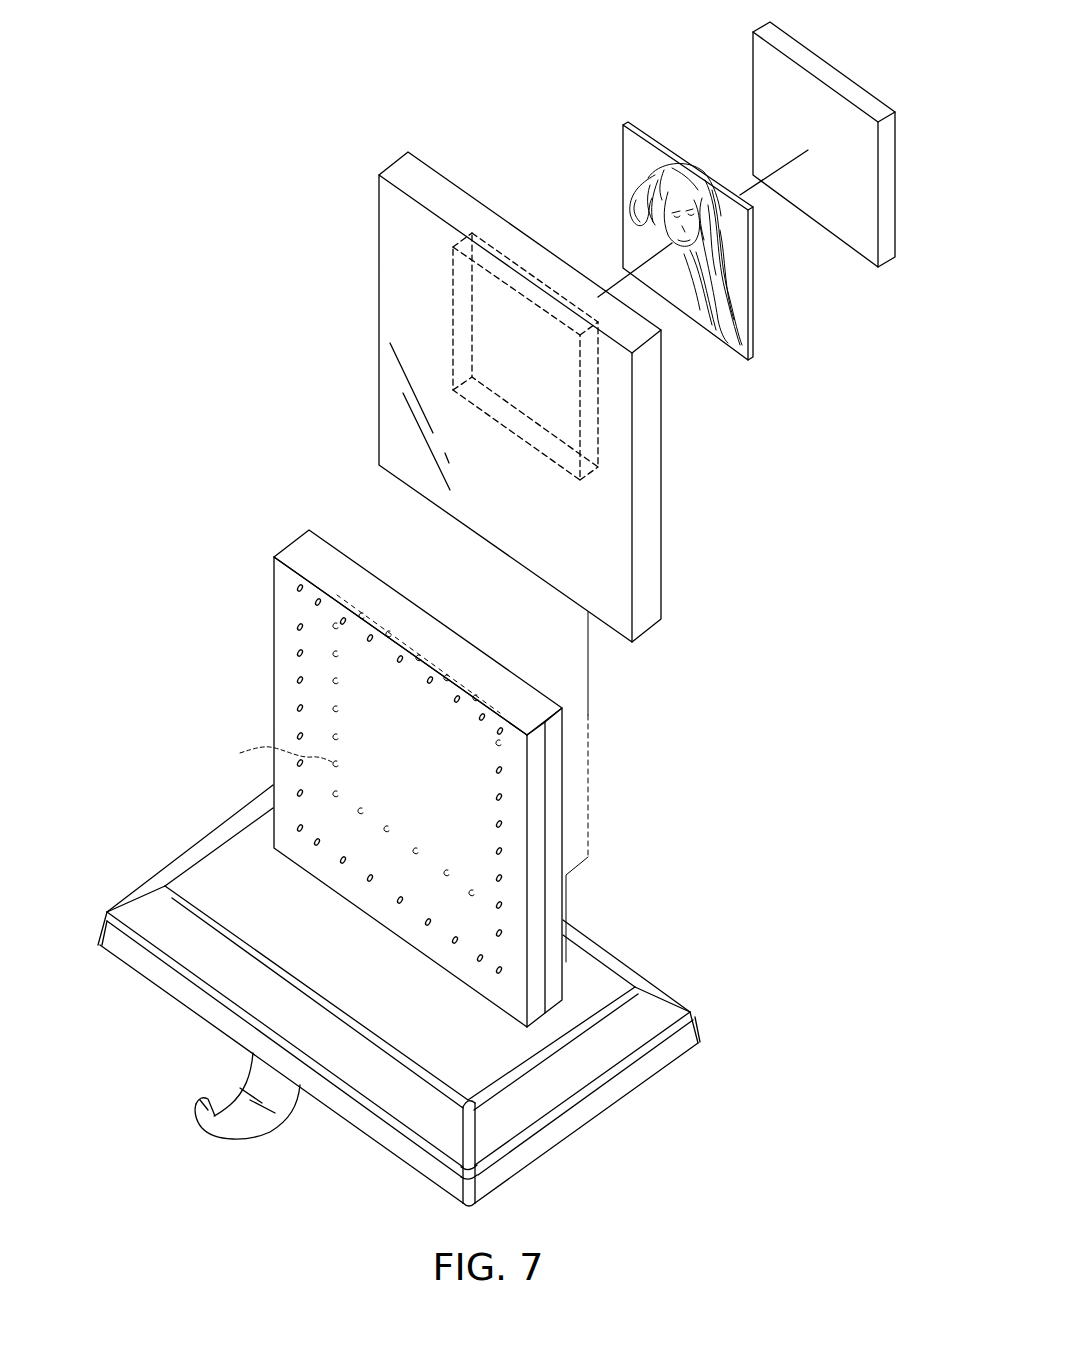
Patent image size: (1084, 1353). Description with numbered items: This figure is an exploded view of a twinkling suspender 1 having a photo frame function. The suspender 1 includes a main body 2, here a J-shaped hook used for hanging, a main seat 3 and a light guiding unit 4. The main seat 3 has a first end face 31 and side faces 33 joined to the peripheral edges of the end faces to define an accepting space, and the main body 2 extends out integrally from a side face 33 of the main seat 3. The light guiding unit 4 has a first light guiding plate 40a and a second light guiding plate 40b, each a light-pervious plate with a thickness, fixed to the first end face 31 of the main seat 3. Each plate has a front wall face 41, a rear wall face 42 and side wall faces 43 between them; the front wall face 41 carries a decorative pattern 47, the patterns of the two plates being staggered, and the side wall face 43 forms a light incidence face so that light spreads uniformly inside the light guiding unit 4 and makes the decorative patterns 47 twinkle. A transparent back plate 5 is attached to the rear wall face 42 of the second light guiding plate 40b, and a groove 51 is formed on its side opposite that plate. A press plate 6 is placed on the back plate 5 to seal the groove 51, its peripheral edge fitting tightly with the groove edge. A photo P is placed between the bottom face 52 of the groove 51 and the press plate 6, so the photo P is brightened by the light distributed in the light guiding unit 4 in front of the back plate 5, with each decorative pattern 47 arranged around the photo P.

The twinkling suspender 1 is at (240, 195).
The main body 2 is at (202, 1115).
The main seat 3 is at (414, 995).
The first end face 31 is at (517, 1043).
The side face 33 is at (191, 997).
The light guiding unit 4 is at (434, 755).
The first light guiding plate 40a is at (300, 573).
The second light guiding plate 40b is at (457, 653).
The front wall face 41 is at (285, 685).
The rear wall face 42 is at (563, 775).
The side wall face 43 is at (533, 905).
The decorative pattern 47 is at (300, 737).
The back plate 5 is at (524, 533).
The groove 51 is at (507, 257).
The bottom face 52 is at (455, 310).
The press plate 6 is at (762, 77).
The photo P is at (752, 283).